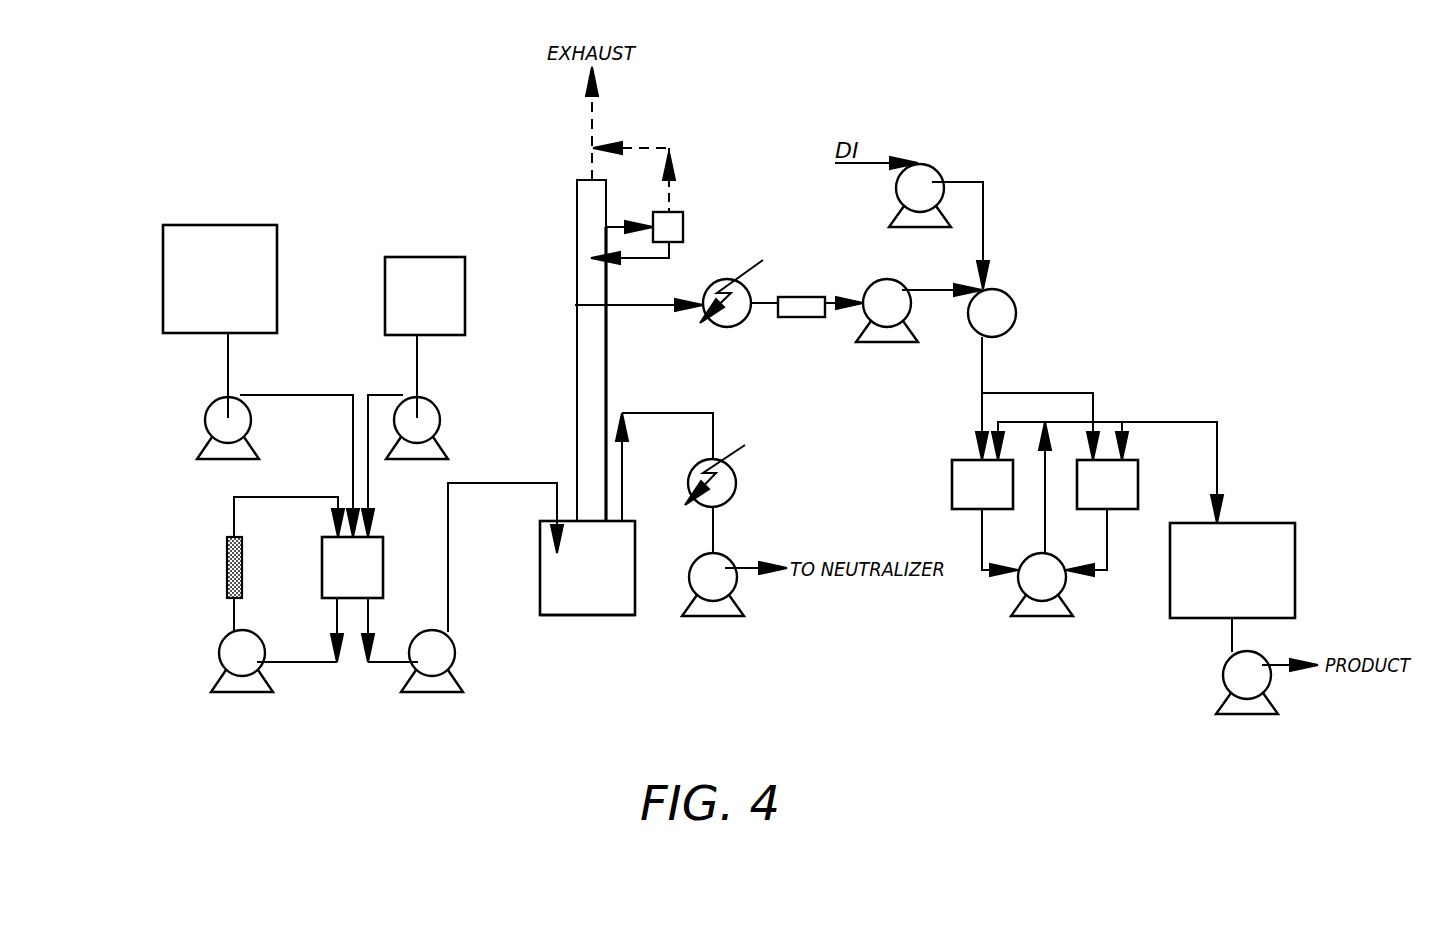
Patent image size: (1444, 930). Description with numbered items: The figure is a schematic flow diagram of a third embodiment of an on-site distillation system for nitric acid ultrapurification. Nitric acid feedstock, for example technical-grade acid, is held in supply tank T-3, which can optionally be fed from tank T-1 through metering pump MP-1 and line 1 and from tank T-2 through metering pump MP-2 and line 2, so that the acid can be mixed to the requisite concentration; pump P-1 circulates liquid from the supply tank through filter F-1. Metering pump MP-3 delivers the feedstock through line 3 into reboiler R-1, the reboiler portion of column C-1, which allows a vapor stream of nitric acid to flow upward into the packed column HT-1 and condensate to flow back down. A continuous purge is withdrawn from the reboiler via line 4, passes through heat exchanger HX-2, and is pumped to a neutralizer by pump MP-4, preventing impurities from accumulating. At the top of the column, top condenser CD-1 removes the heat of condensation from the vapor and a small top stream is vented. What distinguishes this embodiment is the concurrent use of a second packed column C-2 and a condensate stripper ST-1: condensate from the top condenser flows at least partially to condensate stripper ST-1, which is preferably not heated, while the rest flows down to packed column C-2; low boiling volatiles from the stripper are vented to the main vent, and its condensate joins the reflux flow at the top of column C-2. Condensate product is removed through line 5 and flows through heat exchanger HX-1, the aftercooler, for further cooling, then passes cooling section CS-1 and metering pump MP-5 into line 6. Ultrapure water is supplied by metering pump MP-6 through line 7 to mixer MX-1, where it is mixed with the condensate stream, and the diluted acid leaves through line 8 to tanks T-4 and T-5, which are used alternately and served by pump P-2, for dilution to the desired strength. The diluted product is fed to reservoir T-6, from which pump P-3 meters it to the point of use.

The line 1 is at (299, 453).
The line 2 is at (382, 453).
The line 3 is at (505, 557).
The purge line 4 is at (664, 454).
The condensate product line 5 is at (639, 293).
The line 6 is at (942, 280).
The line 7 is at (968, 235).
The line 8 is at (1099, 445).
The tank T-1 is at (220, 321).
The tank T-2 is at (425, 337).
The supply tank T-3 is at (337, 599).
The tank T-4 is at (985, 518).
The tank T-5 is at (1102, 518).
The reservoir T-6 is at (1232, 587).
The metering pump MP-1 is at (202, 428).
The metering pump MP-2 is at (443, 428).
The metering pump MP-3 is at (432, 676).
The pump MP-4 is at (734, 599).
The metering pump MP-5 is at (887, 322).
The metering pump MP-6 is at (920, 211).
The pump P-1 is at (242, 676).
The pump P-2 is at (1042, 601).
The pump P-3 is at (1267, 698).
The filter F-1 is at (261, 564).
The column C-1 is at (591, 350).
The top condenser CD-1 is at (564, 212).
The second packed column C-2 is at (569, 291).
The condensate stripper ST-1 is at (663, 238).
The heat exchanger HX-1 is at (739, 308).
The heat exchanger HX-2 is at (741, 499).
The cooling section CS-1 is at (820, 293).
The mixer MX-1 is at (1021, 313).
The reboiler R-1 is at (587, 568).
The column HT-1 is at (587, 630).